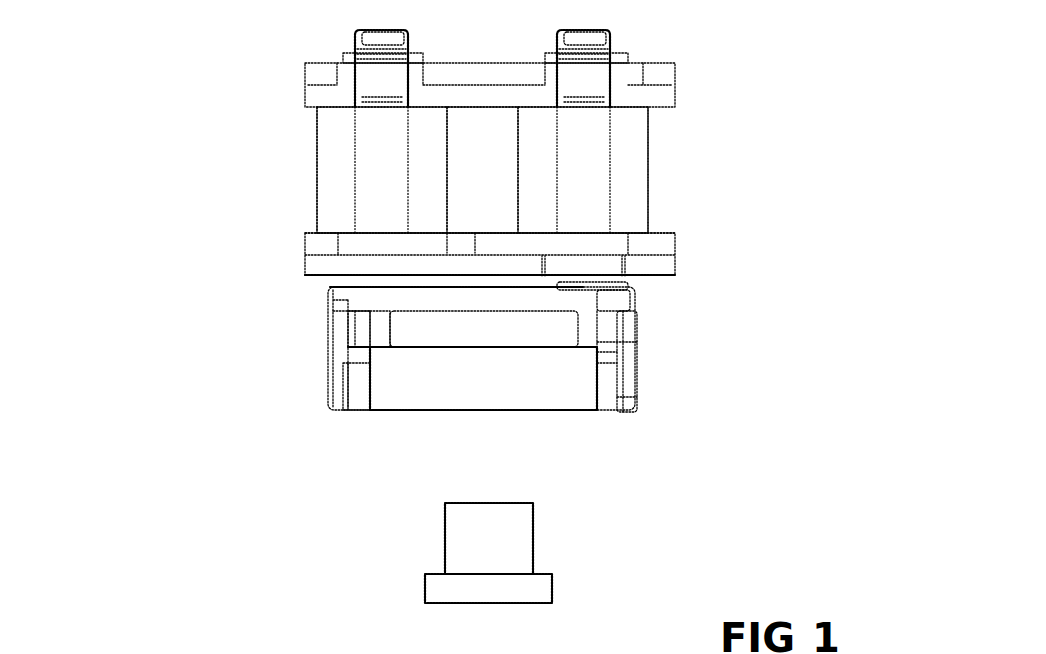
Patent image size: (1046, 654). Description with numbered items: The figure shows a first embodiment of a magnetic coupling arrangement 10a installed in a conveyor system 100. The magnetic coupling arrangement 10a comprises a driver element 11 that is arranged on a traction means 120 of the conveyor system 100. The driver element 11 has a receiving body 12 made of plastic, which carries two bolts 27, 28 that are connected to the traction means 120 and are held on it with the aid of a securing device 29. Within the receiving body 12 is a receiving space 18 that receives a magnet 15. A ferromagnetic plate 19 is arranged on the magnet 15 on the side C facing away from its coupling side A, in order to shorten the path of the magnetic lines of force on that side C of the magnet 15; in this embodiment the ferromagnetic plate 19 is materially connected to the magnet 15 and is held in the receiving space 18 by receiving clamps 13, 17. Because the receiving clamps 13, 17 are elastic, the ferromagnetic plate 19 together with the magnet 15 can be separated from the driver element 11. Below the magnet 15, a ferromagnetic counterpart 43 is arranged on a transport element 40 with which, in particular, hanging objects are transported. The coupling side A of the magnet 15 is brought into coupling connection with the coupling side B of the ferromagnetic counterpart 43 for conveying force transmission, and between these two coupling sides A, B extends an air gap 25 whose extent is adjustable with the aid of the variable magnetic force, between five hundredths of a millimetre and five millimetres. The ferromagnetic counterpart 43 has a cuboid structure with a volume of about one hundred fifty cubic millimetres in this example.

The conveyor system 100 is at (171, 85).
The traction means 120 is at (372, 122).
The securing device 29 is at (646, 61).
The bolt 27 is at (383, 158).
The bolt 28 is at (583, 141).
The receiving body 12 is at (433, 297).
The magnetic coupling arrangement 10a is at (211, 464).
The driver element 11 is at (680, 313).
The receiving space 18 is at (585, 330).
The receiving clamp 13 is at (348, 365).
The magnet 15 is at (392, 393).
The ferromagnetic plate 19 is at (612, 343).
The receiving clamp 17 is at (630, 368).
The air gap 25 is at (562, 508).
The ferromagnetic counterpart 43 is at (520, 530).
The transport element 40 is at (540, 583).
The coupling side of the magnet A is at (437, 444).
The coupling side of the ferromagnetic counterpart B is at (453, 490).
The side of the magnet facing away from the coupling side C is at (440, 330).